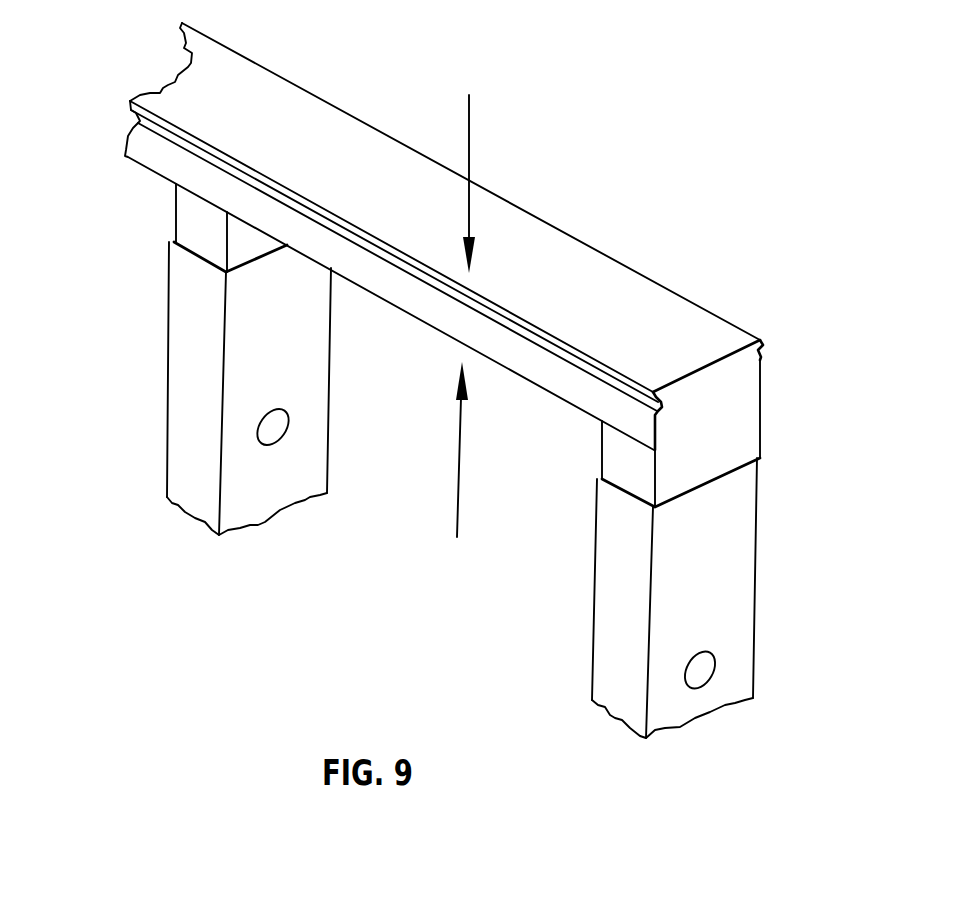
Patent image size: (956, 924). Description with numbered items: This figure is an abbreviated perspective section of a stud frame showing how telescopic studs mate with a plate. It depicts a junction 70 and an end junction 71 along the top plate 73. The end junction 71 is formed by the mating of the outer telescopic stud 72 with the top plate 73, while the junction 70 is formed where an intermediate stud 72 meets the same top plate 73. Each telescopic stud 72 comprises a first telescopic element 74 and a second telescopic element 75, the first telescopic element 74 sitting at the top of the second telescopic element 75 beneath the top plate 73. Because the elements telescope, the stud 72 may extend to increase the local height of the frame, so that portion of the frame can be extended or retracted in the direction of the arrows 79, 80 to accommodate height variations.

The junction 70 is at (161, 212).
The end junction 71 is at (780, 324).
The telescopic stud 72 is at (144, 394).
The top plate 73 is at (668, 305).
The first telescopic element 74 is at (172, 230).
The second telescopic element 75 is at (175, 463).
The downward load arrow 79 is at (470, 142).
The upward load arrow 80 is at (460, 460).